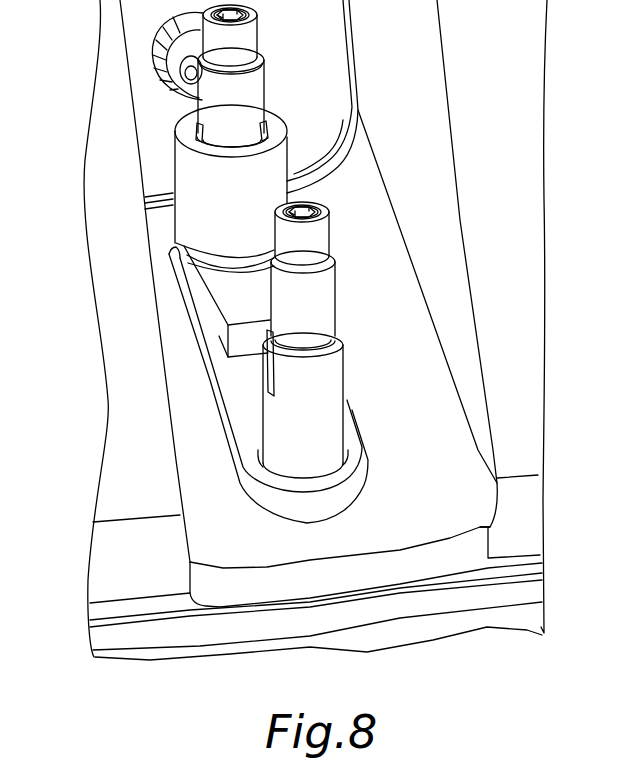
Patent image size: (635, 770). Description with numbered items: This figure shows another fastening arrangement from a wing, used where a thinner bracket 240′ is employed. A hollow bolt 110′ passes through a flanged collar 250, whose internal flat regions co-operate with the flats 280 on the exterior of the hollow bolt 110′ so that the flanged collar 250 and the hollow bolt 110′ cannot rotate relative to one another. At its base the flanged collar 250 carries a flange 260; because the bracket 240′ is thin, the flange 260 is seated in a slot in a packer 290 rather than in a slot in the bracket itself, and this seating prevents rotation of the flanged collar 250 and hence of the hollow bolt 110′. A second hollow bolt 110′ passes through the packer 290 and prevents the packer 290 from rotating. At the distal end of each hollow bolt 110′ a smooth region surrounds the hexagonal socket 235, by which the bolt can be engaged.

The hollow bolt 110′ is at (277, 75).
The hexagonal socket 235 is at (581, 764).
The bracket 240′ is at (527, 309).
The flanged collar 250 is at (200, 190).
The flange 260 is at (230, 298).
The flats 280 is at (262, 352).
The packer 290 is at (250, 393).